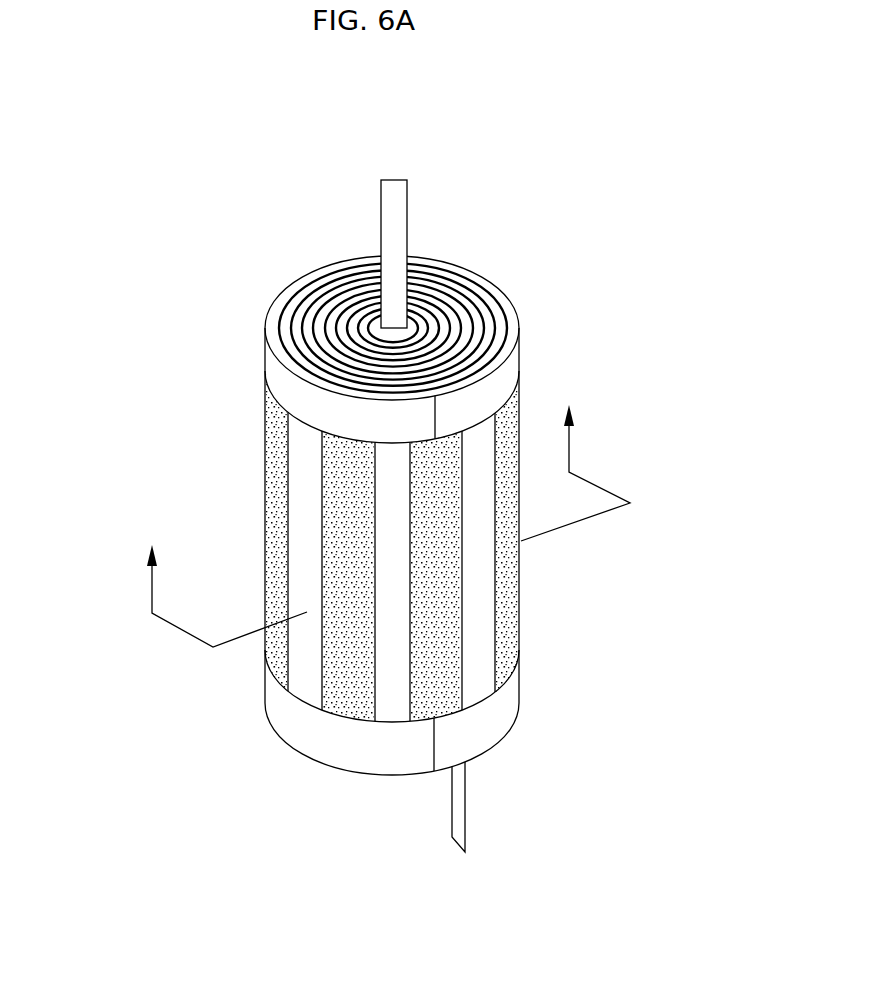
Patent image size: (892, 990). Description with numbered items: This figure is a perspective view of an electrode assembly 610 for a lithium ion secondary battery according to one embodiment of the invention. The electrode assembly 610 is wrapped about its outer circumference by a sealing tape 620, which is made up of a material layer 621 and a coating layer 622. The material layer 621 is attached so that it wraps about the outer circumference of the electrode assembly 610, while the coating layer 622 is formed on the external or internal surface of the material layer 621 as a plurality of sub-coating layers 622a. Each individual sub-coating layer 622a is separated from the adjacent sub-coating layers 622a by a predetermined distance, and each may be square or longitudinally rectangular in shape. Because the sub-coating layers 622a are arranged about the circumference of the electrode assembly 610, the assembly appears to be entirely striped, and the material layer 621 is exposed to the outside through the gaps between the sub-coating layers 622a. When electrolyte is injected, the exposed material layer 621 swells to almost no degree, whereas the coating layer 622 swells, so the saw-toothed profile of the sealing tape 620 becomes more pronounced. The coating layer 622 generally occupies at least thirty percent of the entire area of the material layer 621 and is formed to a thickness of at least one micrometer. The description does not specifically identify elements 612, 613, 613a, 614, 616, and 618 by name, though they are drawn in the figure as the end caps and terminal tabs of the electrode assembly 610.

The electrode assembly 610 is at (195, 157).
The case 612 is at (503, 349).
The upper cap 613 is at (503, 327).
The lower cap 613a is at (433, 743).
The electrode assembly 614 is at (485, 305).
The first electrode terminal 616 is at (397, 182).
The second electrode terminal 618 is at (458, 797).
The sealing tape 620 is at (729, 590).
The material layer 621 is at (488, 658).
The coating layer 622 is at (661, 563).
The sub-coating layer 622a is at (508, 563).